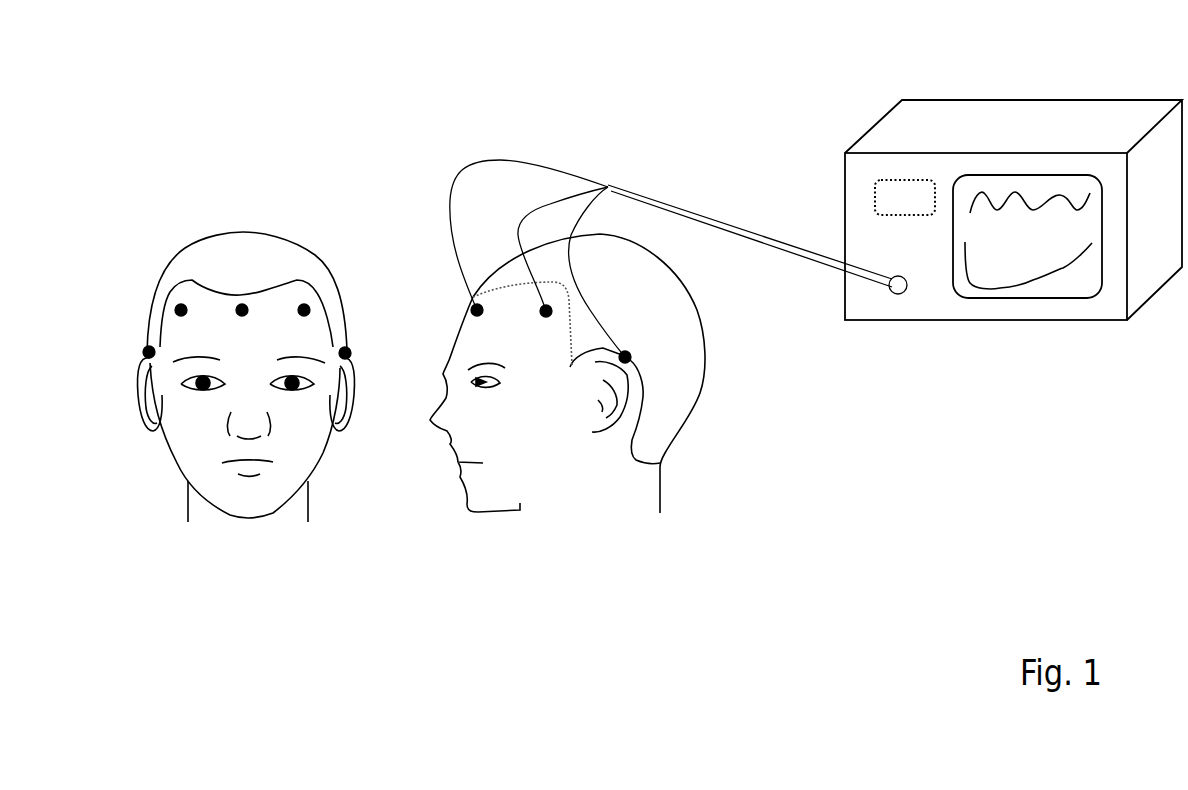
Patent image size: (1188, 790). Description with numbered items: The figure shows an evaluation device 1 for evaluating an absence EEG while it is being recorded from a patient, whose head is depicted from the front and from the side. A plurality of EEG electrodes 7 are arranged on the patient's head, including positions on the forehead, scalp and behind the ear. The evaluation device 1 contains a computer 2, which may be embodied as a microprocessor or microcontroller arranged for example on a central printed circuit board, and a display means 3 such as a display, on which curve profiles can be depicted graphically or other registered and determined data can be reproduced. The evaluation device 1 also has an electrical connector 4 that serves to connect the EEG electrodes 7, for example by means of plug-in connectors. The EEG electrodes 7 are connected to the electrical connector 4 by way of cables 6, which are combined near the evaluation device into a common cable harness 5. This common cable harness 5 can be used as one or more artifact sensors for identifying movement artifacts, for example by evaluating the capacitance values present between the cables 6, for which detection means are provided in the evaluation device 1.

The evaluation device 1 is at (1007, 130).
The computer 2 is at (923, 211).
The display means 3 is at (1085, 275).
The electrical connector 4 is at (898, 296).
The common cable harness 5 is at (734, 218).
The cables 6 is at (462, 166).
The EEG electrodes 7 is at (181, 294).